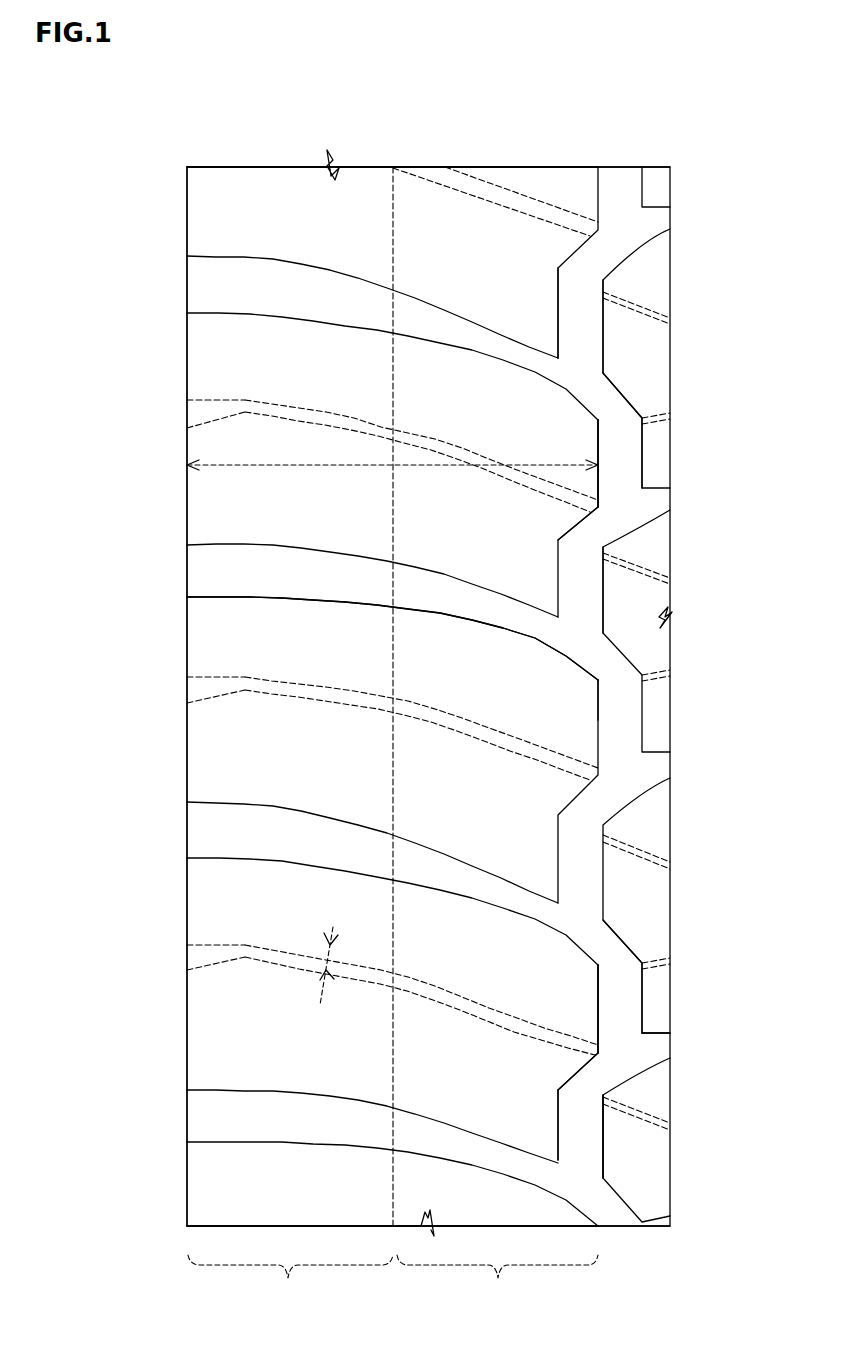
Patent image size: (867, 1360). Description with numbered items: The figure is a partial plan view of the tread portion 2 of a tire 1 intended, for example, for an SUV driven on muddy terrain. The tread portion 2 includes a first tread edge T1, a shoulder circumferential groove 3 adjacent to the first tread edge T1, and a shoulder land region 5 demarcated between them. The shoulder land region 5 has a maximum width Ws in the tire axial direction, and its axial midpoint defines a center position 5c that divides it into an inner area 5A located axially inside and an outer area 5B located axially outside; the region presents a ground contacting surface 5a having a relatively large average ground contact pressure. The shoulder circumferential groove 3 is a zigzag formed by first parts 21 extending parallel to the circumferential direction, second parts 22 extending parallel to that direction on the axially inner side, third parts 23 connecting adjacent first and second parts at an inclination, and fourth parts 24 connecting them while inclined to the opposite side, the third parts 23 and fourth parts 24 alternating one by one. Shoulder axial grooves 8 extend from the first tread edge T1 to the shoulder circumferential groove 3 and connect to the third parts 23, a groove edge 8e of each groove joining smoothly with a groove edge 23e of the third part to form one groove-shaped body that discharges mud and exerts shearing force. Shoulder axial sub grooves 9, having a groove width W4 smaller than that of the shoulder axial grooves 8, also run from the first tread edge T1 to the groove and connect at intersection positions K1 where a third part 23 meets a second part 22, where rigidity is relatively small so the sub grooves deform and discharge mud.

The tire 1 is at (752, 150).
The tread portion 2 is at (690, 155).
The shoulder circumferential groove 3 is at (620, 195).
The shoulder land region 5 is at (294, 207).
The ground contacting surface 5a is at (258, 756).
The center position 5c is at (395, 160).
The inner area 5A is at (497, 1284).
The outer area 5B is at (290, 1284).
The shoulder axial grooves 8 is at (225, 572).
The groove edge 8e is at (285, 598).
The shoulder axial sub grooves 9 is at (273, 957).
The first parts 21 is at (585, 323).
The second parts 22 is at (625, 452).
The third parts 23 is at (600, 532).
The groove edge 23e is at (580, 660).
The fourth parts 24 is at (610, 396).
The first tread edge T1 is at (185, 208).
The maximum width Ws is at (415, 467).
The groove width W4 is at (328, 952).
The intersection position K1 is at (645, 1050).